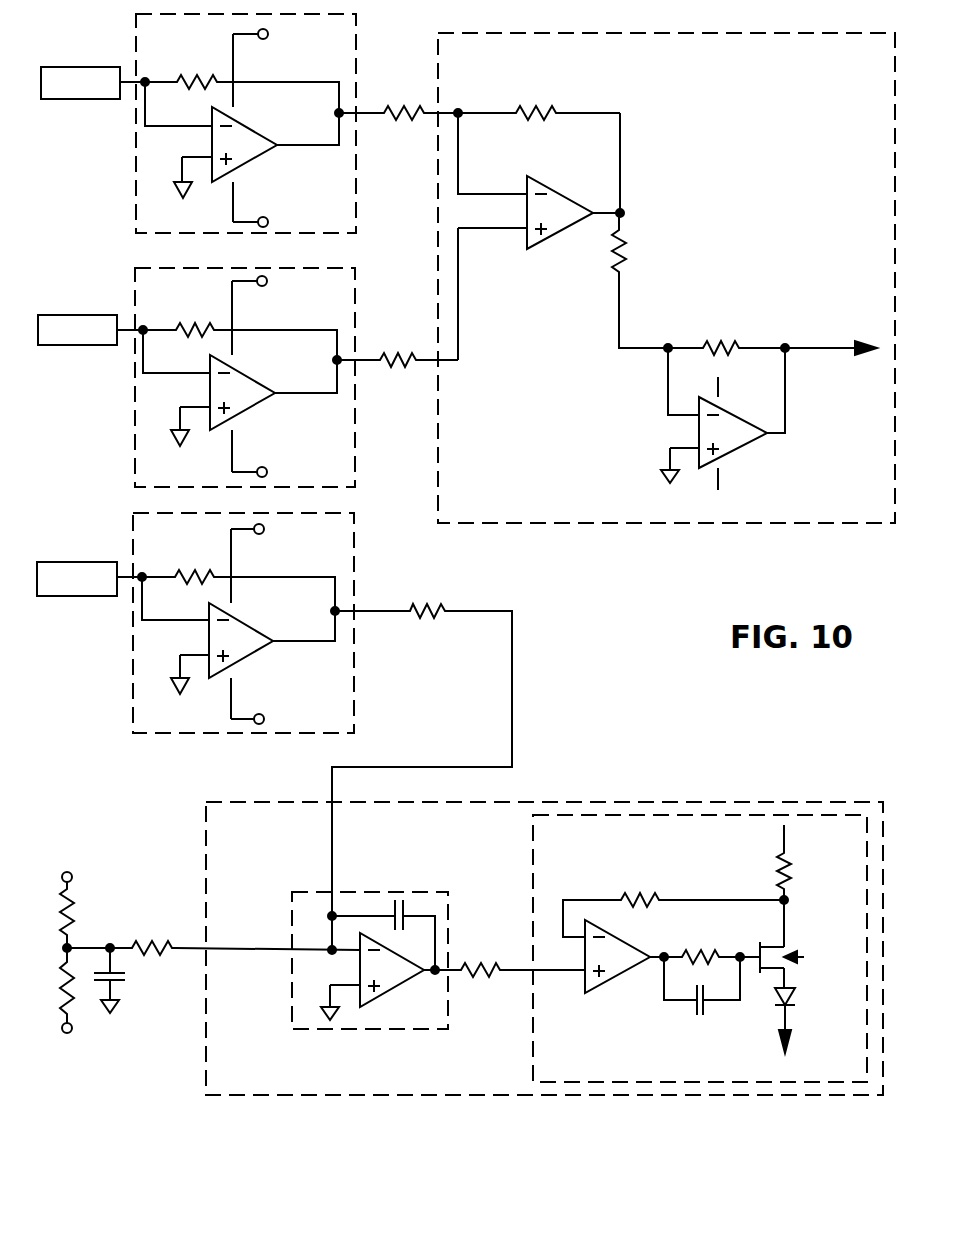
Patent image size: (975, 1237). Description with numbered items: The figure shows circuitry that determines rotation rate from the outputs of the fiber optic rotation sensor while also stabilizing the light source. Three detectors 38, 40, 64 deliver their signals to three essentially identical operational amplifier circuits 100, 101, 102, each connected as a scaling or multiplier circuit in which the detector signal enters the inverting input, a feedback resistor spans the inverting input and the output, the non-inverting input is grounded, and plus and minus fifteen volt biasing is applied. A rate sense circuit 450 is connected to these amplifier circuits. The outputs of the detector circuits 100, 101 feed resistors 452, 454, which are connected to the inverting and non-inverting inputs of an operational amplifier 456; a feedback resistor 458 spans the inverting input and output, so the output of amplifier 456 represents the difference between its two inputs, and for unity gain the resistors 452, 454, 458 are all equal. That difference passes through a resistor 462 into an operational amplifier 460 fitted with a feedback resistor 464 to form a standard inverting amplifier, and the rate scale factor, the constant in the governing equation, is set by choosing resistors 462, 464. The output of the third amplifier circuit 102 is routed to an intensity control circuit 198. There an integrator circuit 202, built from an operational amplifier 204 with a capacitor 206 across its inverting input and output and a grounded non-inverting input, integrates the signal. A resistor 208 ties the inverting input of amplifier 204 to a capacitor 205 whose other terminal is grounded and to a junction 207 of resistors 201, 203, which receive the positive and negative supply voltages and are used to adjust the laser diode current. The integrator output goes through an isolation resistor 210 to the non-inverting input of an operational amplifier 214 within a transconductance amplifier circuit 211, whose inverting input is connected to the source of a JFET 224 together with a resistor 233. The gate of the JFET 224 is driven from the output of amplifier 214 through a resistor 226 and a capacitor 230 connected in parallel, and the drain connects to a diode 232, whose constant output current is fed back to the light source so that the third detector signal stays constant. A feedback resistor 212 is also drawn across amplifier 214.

The detector 38 is at (92, 67).
The detector 40 is at (83, 315).
The detector 64 is at (87, 562).
The operational amplifier circuit 100 is at (358, 42).
The operational amplifier circuit 101 is at (355, 302).
The operational amplifier circuit 102 is at (355, 650).
The rate sense circuit 450 is at (661, 310).
The resistor 452 is at (400, 118).
The resistor 454 is at (405, 365).
The operational amplifier 456 is at (558, 240).
The feedback resistor 458 is at (545, 108).
The operational amplifier 460 is at (735, 455).
The resistor 462 is at (628, 247).
The feedback resistor 464 is at (730, 340).
The intensity control circuit 198 is at (692, 802).
The resistor 201 is at (60, 910).
The resistor 203 is at (62, 978).
The capacitor 205 is at (120, 985).
The junction 207 is at (62, 948).
The resistor 208 is at (160, 945).
The integrator circuit 202 is at (292, 975).
The operational amplifier 204 is at (385, 992).
The capacitor 206 is at (405, 912).
The isolation resistor 210 is at (475, 975).
The transconductance amplifier circuit 211 is at (533, 835).
The feedback resistor 212 is at (645, 897).
The operational amplifier 214 is at (610, 985).
The JFET 224 is at (802, 958).
The resistor 226 is at (705, 950).
The capacitor 230 is at (705, 1005).
The diode 232 is at (795, 995).
The resistor 233 is at (778, 858).